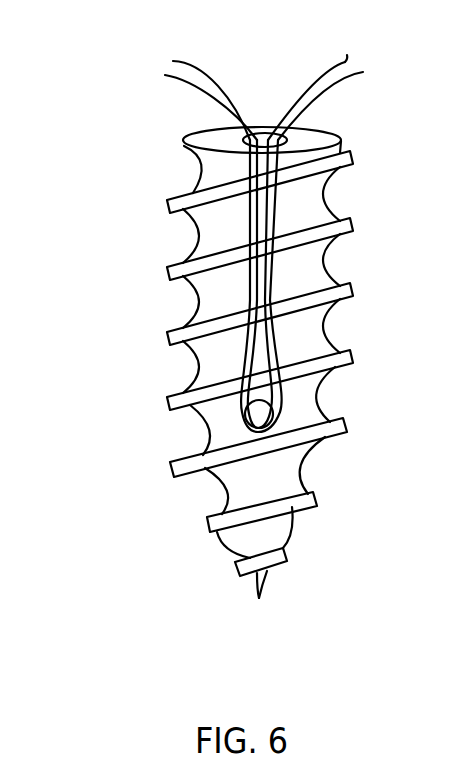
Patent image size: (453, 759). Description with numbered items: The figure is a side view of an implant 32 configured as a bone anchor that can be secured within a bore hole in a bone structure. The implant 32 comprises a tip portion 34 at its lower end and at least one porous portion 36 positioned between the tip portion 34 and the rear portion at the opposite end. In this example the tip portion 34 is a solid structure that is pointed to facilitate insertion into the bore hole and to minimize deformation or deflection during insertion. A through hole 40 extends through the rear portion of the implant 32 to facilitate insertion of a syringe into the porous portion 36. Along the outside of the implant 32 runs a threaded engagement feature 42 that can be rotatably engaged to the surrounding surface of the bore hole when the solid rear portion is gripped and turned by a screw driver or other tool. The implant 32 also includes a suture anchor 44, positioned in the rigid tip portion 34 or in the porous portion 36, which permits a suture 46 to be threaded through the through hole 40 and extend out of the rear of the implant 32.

The implant 32 is at (171, 115).
The tip portion 34 is at (270, 585).
The porous portion 36 is at (331, 382).
The through hole 40 is at (293, 133).
The threaded engagement feature 42 is at (168, 403).
The suture anchor 44 is at (280, 433).
The suture 46 is at (202, 60).